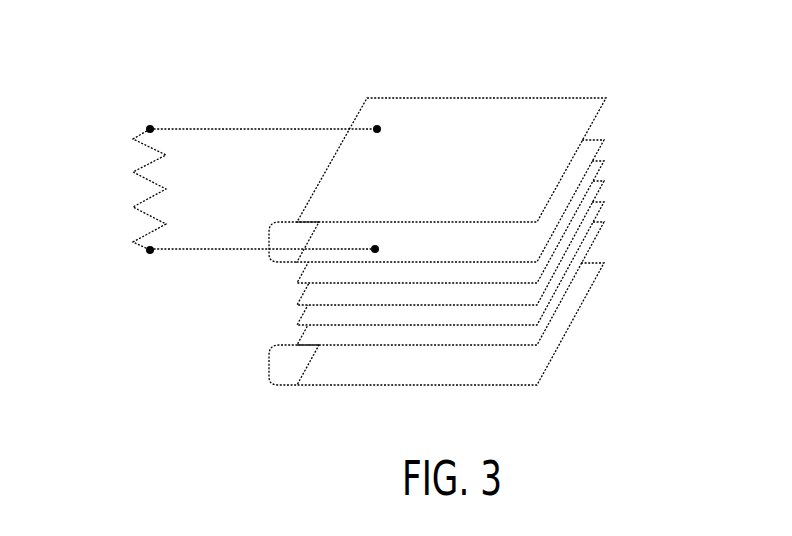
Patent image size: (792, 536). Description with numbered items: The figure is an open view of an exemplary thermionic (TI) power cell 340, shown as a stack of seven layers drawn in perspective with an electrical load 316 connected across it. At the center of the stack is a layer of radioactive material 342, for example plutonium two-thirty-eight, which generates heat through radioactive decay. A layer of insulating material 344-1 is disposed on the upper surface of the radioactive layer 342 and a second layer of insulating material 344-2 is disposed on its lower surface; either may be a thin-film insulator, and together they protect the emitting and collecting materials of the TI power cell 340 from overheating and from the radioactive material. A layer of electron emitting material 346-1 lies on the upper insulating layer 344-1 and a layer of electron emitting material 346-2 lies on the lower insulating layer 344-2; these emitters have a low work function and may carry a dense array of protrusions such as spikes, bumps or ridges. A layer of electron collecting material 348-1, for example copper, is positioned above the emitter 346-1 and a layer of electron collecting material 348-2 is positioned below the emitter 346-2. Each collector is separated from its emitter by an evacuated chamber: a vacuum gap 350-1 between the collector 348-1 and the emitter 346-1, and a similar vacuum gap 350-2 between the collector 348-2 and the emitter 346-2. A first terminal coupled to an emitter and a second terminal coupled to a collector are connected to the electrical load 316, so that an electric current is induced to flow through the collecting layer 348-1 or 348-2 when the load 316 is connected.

The TI power cell 340 is at (594, 55).
The electrical load 316 is at (133, 171).
The layer of electron collecting material 348-1 is at (606, 97).
The layer of electron emitting material 346-1 is at (606, 139).
The layer of insulating material 344-1 is at (606, 160).
The layer of radioactive material 342 is at (606, 182).
The layer of insulating material 344-2 is at (606, 203).
The layer of electron emitting material 346-2 is at (606, 223).
The layer of electron collecting material 348-2 is at (606, 265).
The vacuum gap 350-1 is at (268, 242).
The vacuum gap 350-2 is at (268, 364).